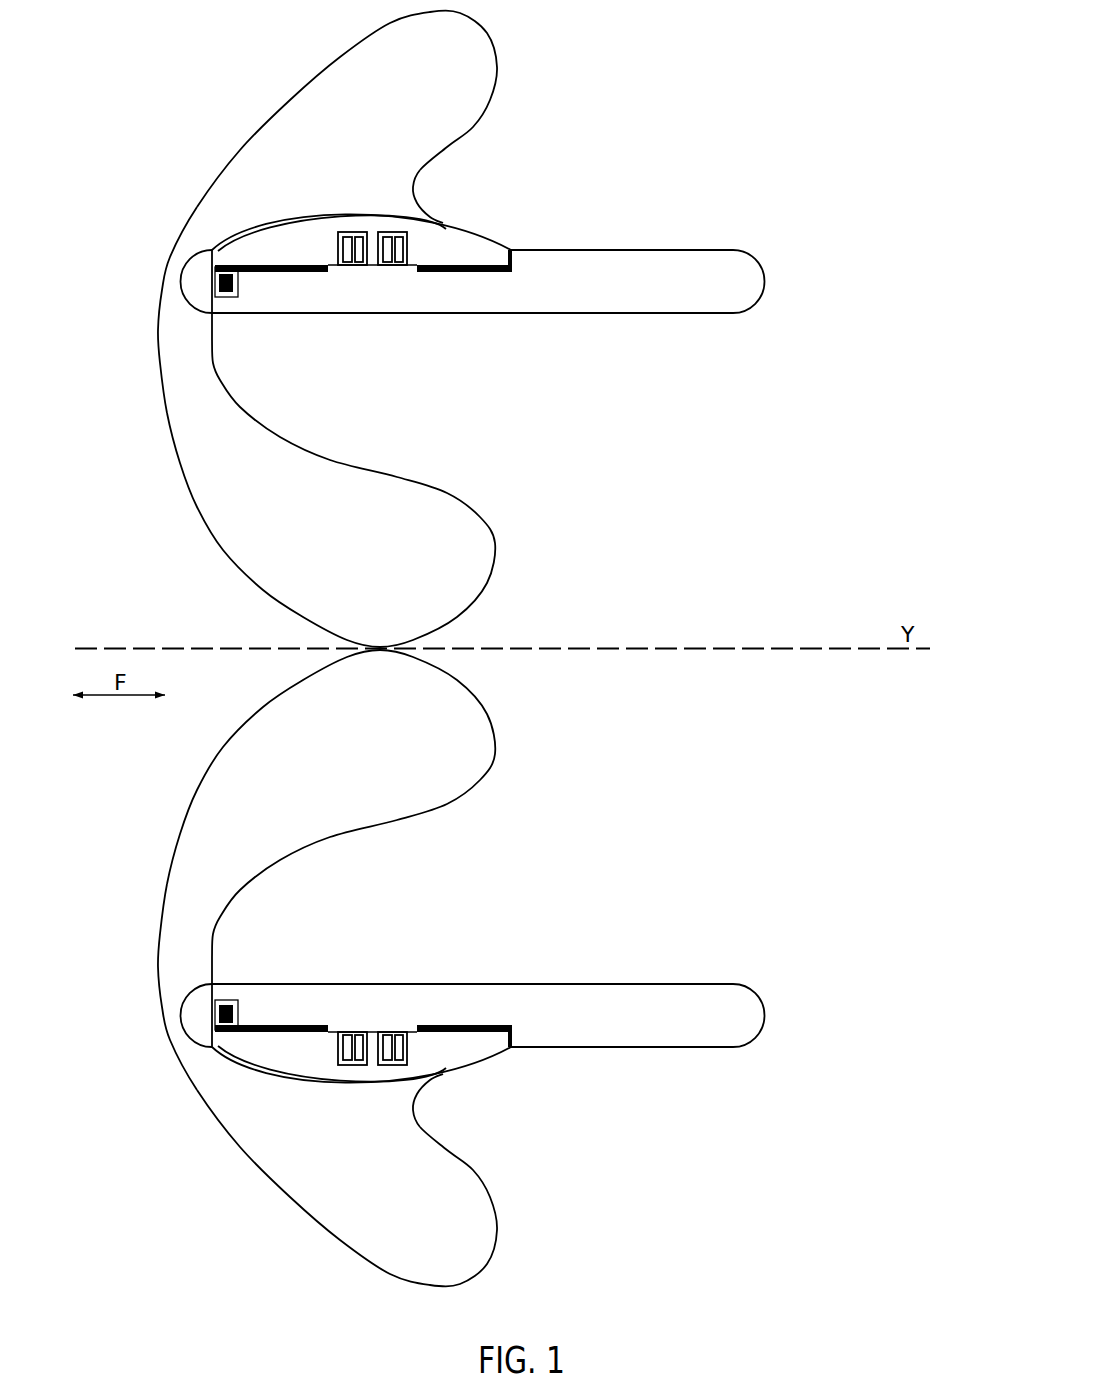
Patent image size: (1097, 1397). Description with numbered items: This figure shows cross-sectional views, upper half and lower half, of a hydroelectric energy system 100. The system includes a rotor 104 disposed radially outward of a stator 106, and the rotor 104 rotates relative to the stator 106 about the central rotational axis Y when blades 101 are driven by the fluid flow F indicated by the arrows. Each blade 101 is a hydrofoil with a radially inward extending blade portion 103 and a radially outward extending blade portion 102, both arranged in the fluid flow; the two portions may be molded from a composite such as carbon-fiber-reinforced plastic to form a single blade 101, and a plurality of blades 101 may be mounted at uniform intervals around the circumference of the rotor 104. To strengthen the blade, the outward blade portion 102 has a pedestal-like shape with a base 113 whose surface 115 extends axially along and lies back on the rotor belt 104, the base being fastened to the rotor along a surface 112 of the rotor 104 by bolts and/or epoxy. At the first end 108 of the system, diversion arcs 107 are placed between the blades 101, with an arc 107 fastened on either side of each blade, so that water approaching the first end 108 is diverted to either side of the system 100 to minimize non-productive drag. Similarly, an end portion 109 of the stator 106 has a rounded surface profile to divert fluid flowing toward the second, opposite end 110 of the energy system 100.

The hydroelectric energy system 100 is at (838, 50).
The blade 101 is at (170, 290).
The radially outward extending blade portion 102 is at (330, 88).
The radially inward extending blade portion 103 is at (222, 528).
The rotor 104 is at (471, 240).
The stator 106 is at (608, 260).
The diversion arc 107 is at (197, 270).
The first end 108 is at (145, 330).
The end portion of the stator 109 is at (740, 297).
The second end 110 is at (790, 287).
The surface of the rotor 112 is at (370, 213).
The base 113 is at (407, 200).
The surface of the base 115 is at (323, 213).